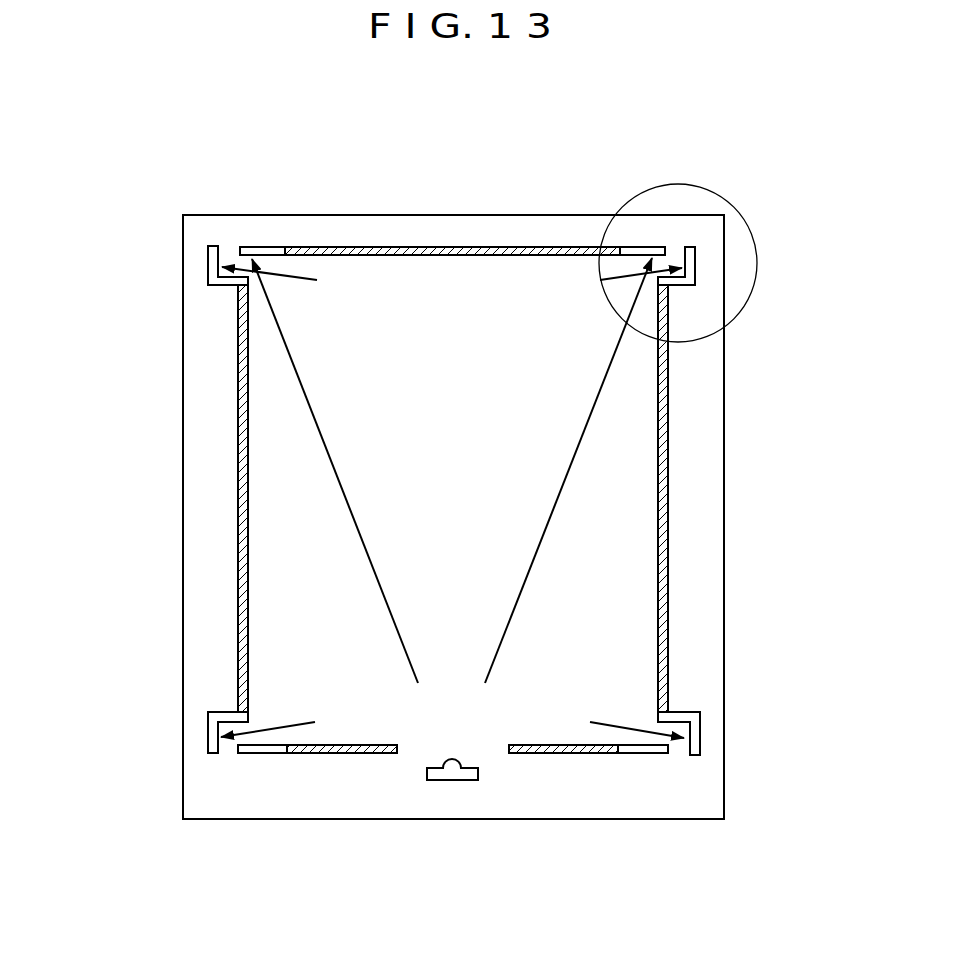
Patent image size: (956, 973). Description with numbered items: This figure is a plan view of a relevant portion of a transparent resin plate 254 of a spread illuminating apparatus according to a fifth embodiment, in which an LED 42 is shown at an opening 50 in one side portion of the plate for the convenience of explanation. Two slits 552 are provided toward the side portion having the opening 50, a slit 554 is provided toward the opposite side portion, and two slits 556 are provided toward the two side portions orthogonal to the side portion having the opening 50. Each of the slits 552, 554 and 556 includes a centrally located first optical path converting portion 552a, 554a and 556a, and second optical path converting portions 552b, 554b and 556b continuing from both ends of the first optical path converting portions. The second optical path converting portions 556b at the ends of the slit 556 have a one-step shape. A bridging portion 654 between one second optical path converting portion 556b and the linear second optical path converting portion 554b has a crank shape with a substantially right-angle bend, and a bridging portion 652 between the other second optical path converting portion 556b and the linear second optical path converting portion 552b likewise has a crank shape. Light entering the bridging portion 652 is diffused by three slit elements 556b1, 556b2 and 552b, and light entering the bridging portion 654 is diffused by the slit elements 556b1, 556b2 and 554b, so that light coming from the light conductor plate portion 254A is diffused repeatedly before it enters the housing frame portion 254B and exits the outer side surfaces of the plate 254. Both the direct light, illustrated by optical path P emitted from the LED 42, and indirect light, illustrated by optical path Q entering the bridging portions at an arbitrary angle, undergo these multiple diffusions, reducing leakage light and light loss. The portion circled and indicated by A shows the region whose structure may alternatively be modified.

The transparent resin plate 254 is at (724, 550).
The light conductor plate portion 254A is at (500, 461).
The housing frame portion 254B is at (181, 447).
The slit 554 is at (452, 197).
The first optical path converting portion 554a is at (500, 247).
The second optical path converting portion 554b is at (268, 247).
The bridging portion 654 is at (228, 255).
The slit 556 is at (444, 498).
The first optical path converting portion 556a is at (238, 593).
The second optical path converting portion 556b is at (447, 503).
The slit element 556b1 is at (223, 285).
The slit element 556b2 is at (207, 252).
The slit 552 is at (451, 835).
The first optical path converting portion 552a is at (315, 755).
The second optical path converting portion 552b is at (258, 755).
The bridging portion 652 is at (212, 757).
The LED 42 is at (465, 782).
The opening 50 is at (437, 783).
The optical path P is at (376, 578).
The optical path Q is at (300, 271).
The circled portion A is at (757, 245).